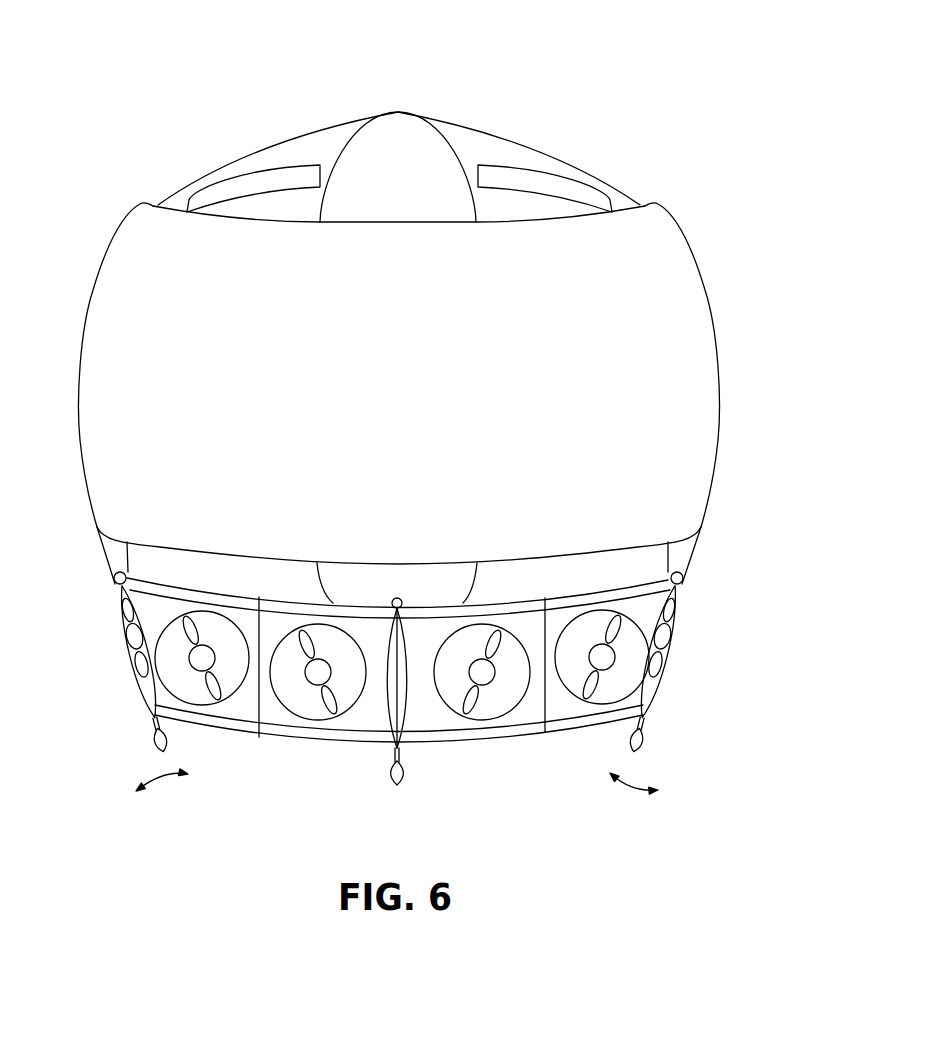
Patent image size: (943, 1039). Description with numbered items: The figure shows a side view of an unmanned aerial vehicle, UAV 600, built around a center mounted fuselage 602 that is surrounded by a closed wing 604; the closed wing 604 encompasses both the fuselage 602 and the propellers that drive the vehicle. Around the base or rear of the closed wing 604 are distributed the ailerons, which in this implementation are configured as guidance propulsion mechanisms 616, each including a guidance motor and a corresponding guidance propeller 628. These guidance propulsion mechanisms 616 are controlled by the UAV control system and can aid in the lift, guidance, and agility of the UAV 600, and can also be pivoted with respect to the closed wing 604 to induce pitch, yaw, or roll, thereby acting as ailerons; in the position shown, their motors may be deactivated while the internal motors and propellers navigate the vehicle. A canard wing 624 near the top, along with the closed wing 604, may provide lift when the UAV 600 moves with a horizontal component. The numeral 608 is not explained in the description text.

The UAV 600 is at (694, 121).
The center mounted fuselage 602 is at (412, 143).
The closed wing 604 is at (697, 350).
The lower ring assembly 608 is at (650, 758).
The guidance propulsion mechanism 616 is at (172, 702).
The canard wing 624 is at (479, 153).
The guidance propeller 628 is at (122, 613).